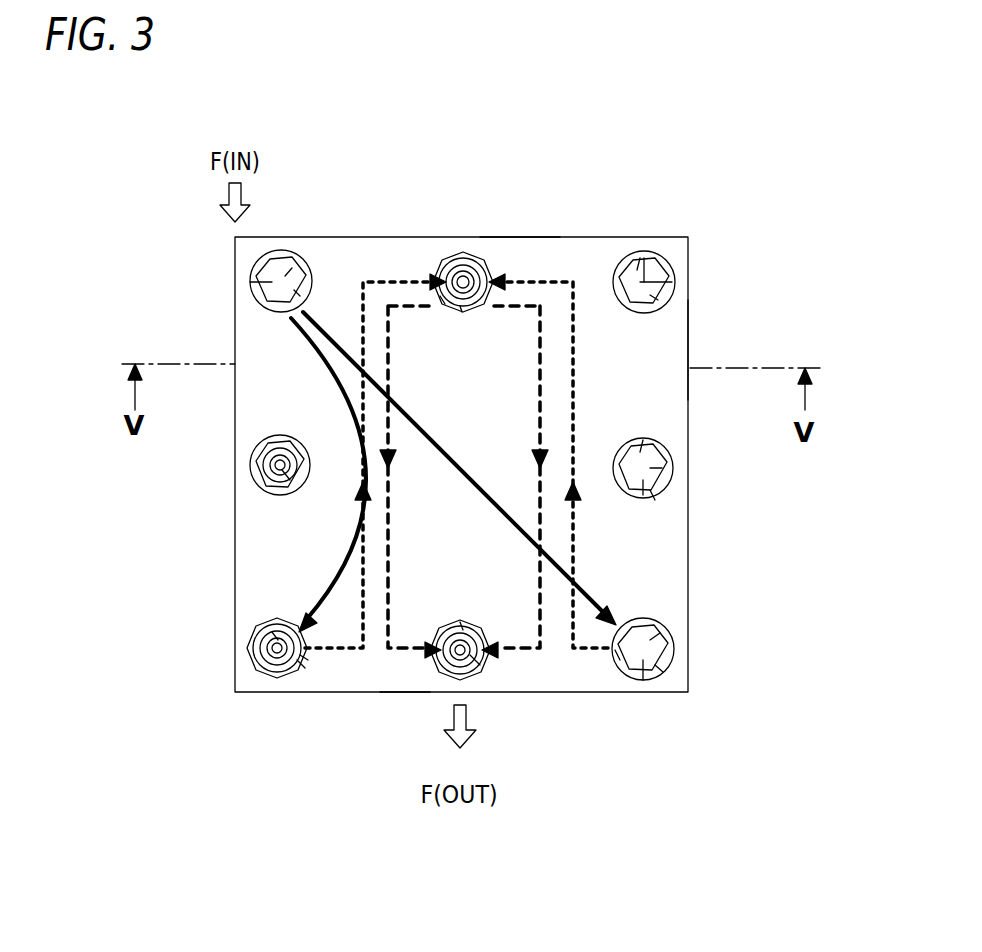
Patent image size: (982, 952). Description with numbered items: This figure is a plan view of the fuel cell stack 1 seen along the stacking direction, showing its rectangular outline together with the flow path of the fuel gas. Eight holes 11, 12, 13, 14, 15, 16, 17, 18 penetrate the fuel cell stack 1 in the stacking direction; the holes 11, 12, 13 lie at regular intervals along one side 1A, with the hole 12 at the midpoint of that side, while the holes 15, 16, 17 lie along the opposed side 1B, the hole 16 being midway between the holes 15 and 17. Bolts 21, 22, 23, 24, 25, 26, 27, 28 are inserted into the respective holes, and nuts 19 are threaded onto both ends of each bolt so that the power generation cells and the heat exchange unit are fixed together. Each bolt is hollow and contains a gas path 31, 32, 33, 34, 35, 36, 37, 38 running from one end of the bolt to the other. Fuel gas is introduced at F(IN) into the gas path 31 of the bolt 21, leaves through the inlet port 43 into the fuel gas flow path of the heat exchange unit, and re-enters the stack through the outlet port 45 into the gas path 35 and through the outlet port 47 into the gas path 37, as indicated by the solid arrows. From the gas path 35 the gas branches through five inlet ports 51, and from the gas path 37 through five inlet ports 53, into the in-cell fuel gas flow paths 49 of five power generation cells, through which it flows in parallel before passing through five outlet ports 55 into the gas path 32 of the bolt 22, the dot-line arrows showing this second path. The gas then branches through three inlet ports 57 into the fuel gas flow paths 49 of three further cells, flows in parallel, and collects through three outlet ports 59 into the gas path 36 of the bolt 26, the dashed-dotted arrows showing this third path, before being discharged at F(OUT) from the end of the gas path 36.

The fuel cell stack 1 is at (822, 142).
The side 1A is at (561, 236).
The side 1B is at (406, 694).
The hole 11 is at (294, 258).
The hole 12 is at (446, 258).
The hole 13 is at (656, 256).
The hole 14 is at (648, 450).
The hole 15 is at (656, 645).
The hole 16 is at (430, 680).
The hole 17 is at (284, 680).
The hole 18 is at (262, 447).
The nut 19 is at (272, 305).
The bolt 21 is at (307, 262).
The bolt 22 is at (460, 262).
The bolt 23 is at (631, 258).
The bolt 24 is at (652, 468).
The bolt 25 is at (650, 680).
The bolt 26 is at (478, 680).
The bolt 27 is at (262, 680).
The bolt 28 is at (266, 465).
The gas path 31 is at (252, 283).
The gas path 32 is at (468, 258).
The gas path 33 is at (660, 283).
The gas path 34 is at (648, 490).
The gas path 35 is at (656, 676).
The gas path 36 is at (453, 680).
The gas path 37 is at (266, 648).
The gas path 38 is at (268, 490).
The inlet port 43 is at (334, 250).
The outlet port 45 is at (612, 612).
The outlet port 47 is at (320, 665).
The fuel gas flow path 49 is at (662, 352).
The inlet port 51 is at (615, 662).
The inlet port 53 is at (306, 668).
The outlet port 55 is at (462, 312).
The inlet port 57 is at (445, 308).
The outlet port 59 is at (462, 622).